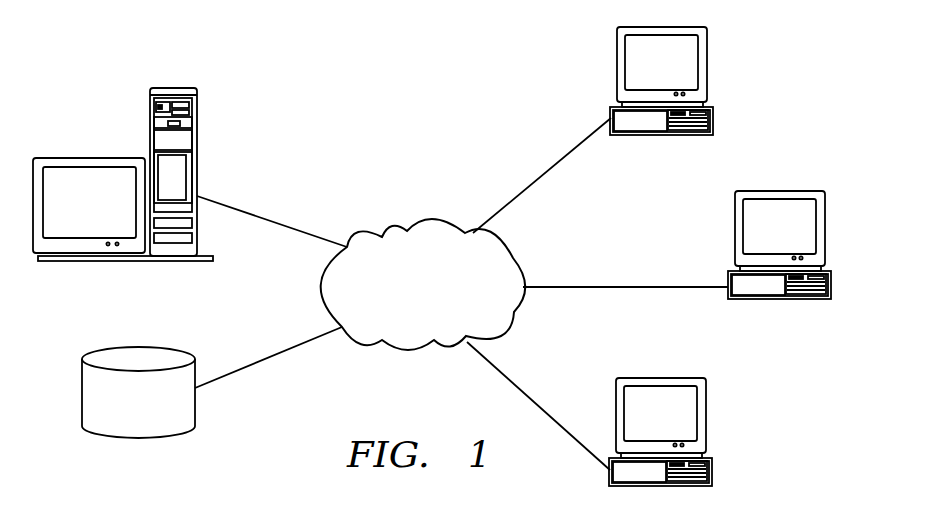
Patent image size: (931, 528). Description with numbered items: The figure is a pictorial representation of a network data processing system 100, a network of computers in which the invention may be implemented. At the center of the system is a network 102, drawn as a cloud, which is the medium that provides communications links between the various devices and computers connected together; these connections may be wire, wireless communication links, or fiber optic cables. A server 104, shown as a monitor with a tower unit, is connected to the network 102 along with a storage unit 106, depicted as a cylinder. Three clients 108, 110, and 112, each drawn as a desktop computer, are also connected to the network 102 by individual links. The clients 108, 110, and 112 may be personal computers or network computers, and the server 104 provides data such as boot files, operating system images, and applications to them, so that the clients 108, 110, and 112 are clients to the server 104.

The network data processing system 100 is at (292, 73).
The network 102 is at (445, 316).
The server 104 is at (150, 112).
The storage unit 106 is at (82, 392).
The client 108 is at (708, 72).
The client 110 is at (828, 235).
The client 112 is at (707, 422).